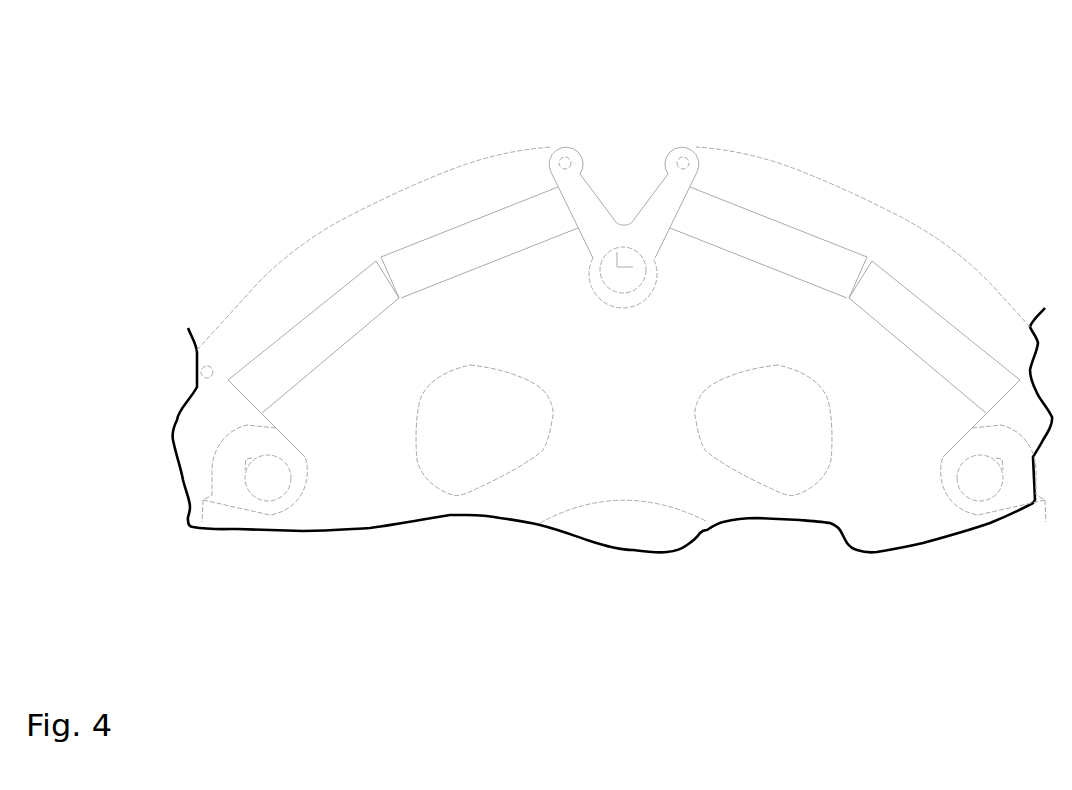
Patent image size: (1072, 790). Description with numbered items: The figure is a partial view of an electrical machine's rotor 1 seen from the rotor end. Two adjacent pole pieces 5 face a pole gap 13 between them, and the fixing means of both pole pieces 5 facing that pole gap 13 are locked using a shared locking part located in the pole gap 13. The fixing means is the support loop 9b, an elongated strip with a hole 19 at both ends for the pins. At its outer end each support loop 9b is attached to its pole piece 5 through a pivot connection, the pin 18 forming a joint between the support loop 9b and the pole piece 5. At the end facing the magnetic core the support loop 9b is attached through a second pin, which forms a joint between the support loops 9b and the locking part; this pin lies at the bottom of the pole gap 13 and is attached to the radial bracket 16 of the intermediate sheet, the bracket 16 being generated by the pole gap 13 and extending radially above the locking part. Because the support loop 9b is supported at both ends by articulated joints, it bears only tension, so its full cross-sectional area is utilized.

The rotor 1 is at (254, 188).
The pole piece 5 is at (380, 245).
The support loop 9b is at (610, 293).
The pole gap 13 is at (623, 307).
The bracket 16 is at (623, 218).
The pin 18 is at (566, 162).
The hole 19 is at (645, 270).